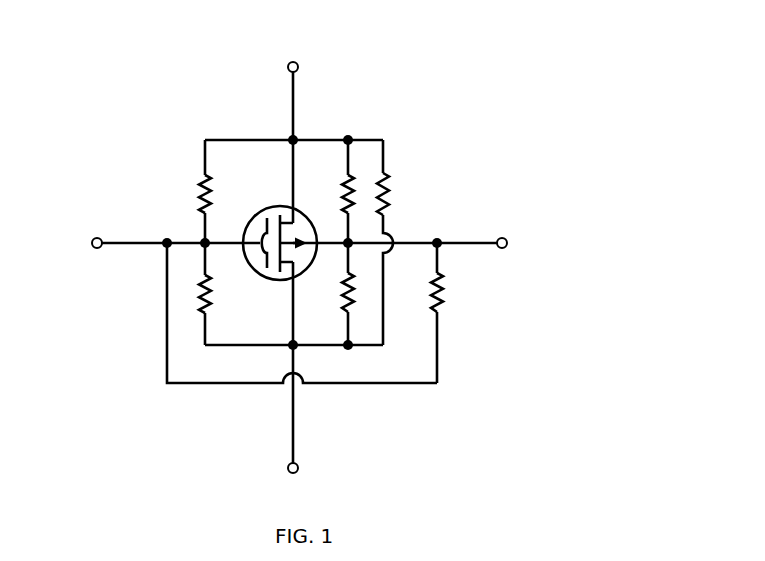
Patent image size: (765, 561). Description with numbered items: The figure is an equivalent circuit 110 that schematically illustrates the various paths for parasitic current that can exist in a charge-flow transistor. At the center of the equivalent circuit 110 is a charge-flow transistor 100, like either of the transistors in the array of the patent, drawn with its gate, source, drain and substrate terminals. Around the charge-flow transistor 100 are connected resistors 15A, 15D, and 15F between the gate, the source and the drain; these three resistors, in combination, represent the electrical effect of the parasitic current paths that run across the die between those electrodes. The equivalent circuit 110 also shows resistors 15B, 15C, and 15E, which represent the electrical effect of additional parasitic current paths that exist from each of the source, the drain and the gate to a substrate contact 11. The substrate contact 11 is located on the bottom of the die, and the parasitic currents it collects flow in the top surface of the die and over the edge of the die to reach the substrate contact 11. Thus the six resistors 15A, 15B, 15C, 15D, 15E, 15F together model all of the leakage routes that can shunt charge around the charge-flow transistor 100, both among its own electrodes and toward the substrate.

The equivalent circuit 110 is at (510, 113).
The charge-flow transistor 100 is at (259, 207).
The substrate contact 11 is at (505, 248).
The resistor 15A is at (198, 303).
The resistor 15B is at (445, 293).
The resistor 15C is at (355, 305).
The resistor 15D is at (388, 197).
The resistor 15E is at (350, 180).
The resistor 15F is at (195, 186).